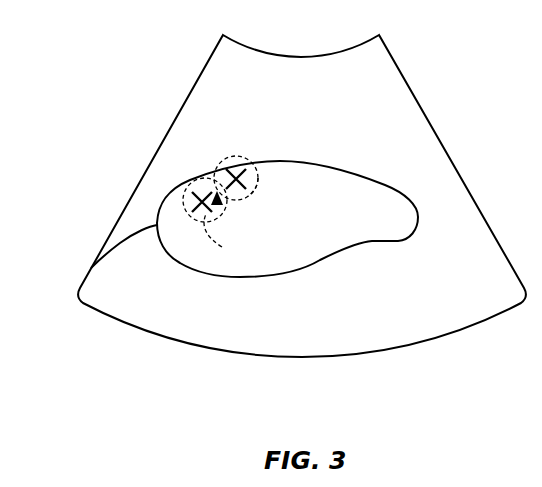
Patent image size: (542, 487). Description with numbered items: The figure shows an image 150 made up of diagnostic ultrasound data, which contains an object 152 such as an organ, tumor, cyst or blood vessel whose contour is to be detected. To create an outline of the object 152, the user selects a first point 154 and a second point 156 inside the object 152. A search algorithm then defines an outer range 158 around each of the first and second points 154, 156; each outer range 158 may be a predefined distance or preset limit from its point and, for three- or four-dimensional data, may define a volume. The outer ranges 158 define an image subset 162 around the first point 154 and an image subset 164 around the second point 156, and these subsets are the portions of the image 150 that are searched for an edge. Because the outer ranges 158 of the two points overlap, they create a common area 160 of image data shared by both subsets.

The image 150 is at (416, 86).
The object 152 is at (91, 268).
The first point 154 is at (201, 193).
The second point 156 is at (245, 167).
The outer range 158 is at (238, 156).
The common area 160 is at (226, 215).
The image subset 162 is at (240, 237).
The image subset 164 is at (259, 179).